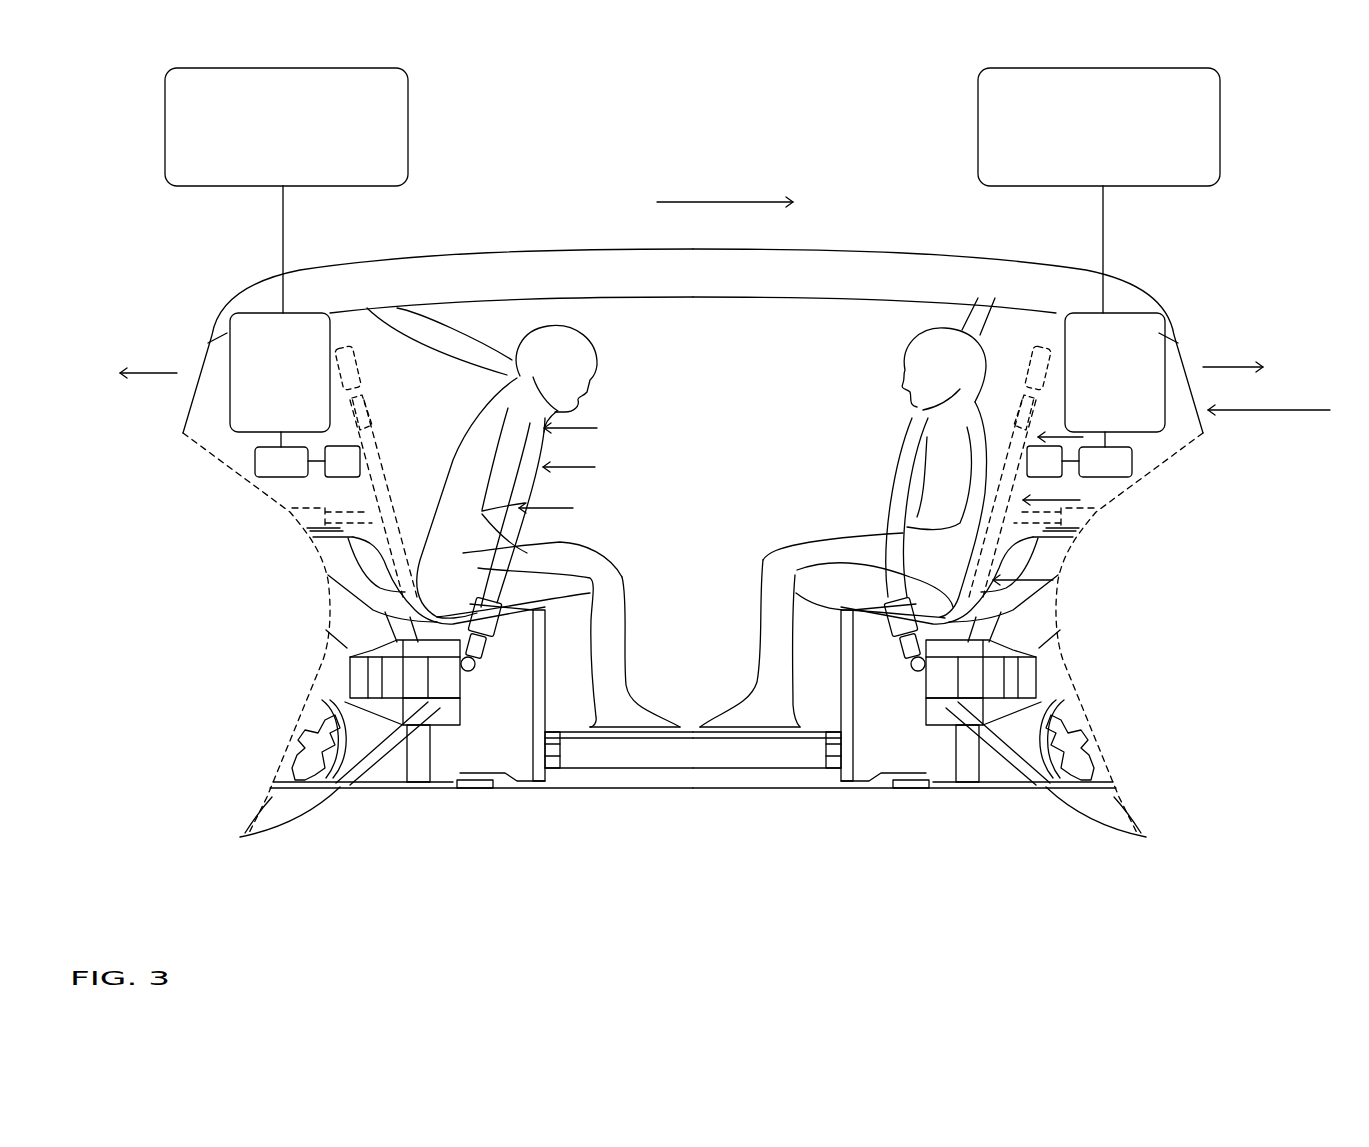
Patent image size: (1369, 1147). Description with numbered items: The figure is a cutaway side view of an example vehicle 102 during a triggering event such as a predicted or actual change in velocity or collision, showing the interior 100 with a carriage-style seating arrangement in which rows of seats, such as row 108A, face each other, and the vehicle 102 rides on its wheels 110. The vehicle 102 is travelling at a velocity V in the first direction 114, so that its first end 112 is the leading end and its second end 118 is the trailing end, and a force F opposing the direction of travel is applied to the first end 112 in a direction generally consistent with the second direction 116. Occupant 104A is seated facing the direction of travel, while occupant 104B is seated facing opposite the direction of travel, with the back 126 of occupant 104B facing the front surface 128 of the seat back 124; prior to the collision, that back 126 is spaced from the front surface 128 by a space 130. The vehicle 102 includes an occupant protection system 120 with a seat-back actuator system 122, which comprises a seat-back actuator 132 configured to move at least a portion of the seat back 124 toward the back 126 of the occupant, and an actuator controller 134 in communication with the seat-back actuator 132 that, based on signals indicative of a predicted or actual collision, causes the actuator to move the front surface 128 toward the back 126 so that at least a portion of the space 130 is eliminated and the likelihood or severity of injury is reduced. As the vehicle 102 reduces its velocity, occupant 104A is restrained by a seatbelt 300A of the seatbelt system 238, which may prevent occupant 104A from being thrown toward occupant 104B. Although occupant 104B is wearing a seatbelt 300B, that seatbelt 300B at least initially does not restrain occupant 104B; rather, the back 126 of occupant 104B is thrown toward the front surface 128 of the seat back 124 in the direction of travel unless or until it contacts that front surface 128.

The interior 100 is at (687, 367).
The vehicle 102 is at (530, 188).
The occupant 104A is at (592, 380).
The occupant 104B is at (907, 371).
The row 108A is at (345, 325).
The wheels 110 is at (280, 813).
The first end 112 is at (1132, 268).
The first direction 114 is at (1252, 365).
The second direction 116 is at (126, 373).
The second end 118 is at (238, 282).
The occupant protection system 120 is at (270, 163).
The seat-back actuator system 122 is at (265, 421).
The seat back 124 is at (365, 428).
The back 126 is at (475, 397).
The front surface 128 is at (372, 447).
The space 130 is at (404, 385).
The seat-back actuator 132 is at (348, 468).
The actuator controller 134 is at (266, 473).
The seatbelt system 238 is at (612, 536).
The seatbelt 300A is at (492, 350).
The seatbelt 300B is at (893, 463).